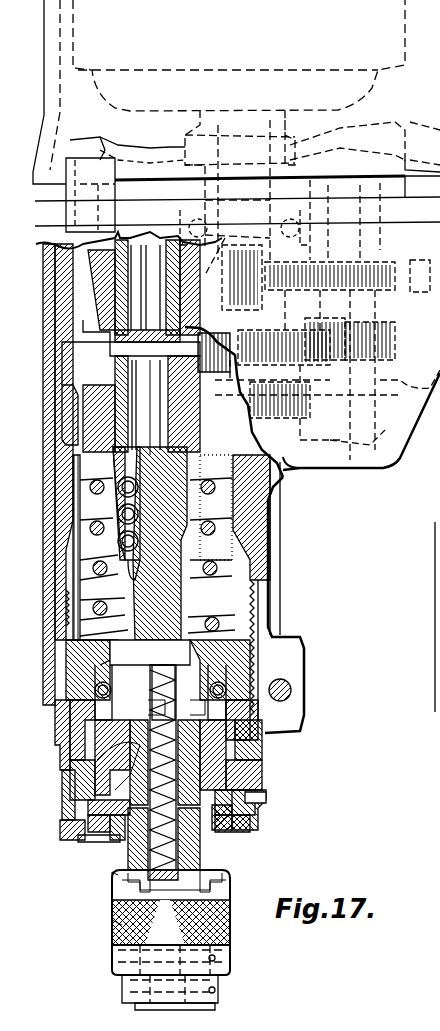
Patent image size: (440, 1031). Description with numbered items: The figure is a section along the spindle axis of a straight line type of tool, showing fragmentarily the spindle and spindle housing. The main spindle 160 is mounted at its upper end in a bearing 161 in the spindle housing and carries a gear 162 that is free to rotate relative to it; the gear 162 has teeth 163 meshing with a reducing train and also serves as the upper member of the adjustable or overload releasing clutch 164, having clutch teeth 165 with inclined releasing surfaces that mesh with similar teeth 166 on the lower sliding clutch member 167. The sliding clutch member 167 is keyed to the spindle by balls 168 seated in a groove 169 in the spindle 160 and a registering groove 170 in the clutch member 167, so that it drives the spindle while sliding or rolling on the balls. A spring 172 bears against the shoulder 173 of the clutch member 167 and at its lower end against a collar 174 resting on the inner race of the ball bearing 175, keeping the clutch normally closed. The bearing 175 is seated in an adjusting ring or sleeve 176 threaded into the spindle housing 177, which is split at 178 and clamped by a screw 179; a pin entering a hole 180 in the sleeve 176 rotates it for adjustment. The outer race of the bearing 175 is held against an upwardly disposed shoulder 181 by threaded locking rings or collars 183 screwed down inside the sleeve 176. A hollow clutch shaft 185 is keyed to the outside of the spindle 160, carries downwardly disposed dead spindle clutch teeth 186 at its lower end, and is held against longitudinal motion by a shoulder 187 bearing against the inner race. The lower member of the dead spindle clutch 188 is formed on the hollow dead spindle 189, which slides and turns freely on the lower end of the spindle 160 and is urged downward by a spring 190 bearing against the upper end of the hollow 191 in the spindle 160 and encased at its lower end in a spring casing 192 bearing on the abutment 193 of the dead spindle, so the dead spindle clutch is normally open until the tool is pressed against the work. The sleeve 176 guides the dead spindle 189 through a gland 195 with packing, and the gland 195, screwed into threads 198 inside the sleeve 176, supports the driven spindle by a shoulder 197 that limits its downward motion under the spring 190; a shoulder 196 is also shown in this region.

The main spindle 160 is at (147, 372).
The bearing 161 is at (135, 299).
The gear 162 is at (88, 412).
The teeth 163 is at (70, 410).
The adjustable or overload releasing clutch 164 is at (55, 452).
The clutch teeth 165 is at (178, 445).
The teeth 166 is at (245, 436).
The lower sliding clutch member 167 is at (262, 518).
The balls 168 is at (76, 492).
The groove 169 is at (95, 562).
The groove 170 is at (115, 520).
The spring 172 is at (92, 612).
The shoulder 173 is at (283, 482).
The collar 174 is at (100, 662).
The ball bearing 175 is at (95, 700).
The adjusting ring or sleeve 176 is at (120, 745).
The spindle housing 177 is at (250, 516).
The split 178 is at (263, 627).
The screw 179 is at (288, 688).
The hole 180 is at (268, 797).
The shoulder 181 is at (262, 738).
The threaded locking rings or collars 183 is at (235, 638).
The hollow clutch shaft 185 is at (90, 770).
The dead spindle clutch teeth 186 is at (100, 840).
The shoulder 187 is at (68, 796).
The lower member of the dead spindle clutch 188 is at (240, 757).
The dead spindle 189 is at (141, 907).
The spring 190 is at (200, 842).
The hollow 191 is at (218, 575).
The spring casing 192 is at (200, 855).
The abutment 193 is at (232, 915).
The gland 195 is at (110, 838).
The nut 196 is at (248, 778).
The shoulder 197 is at (262, 790).
The threads 198 is at (75, 835).